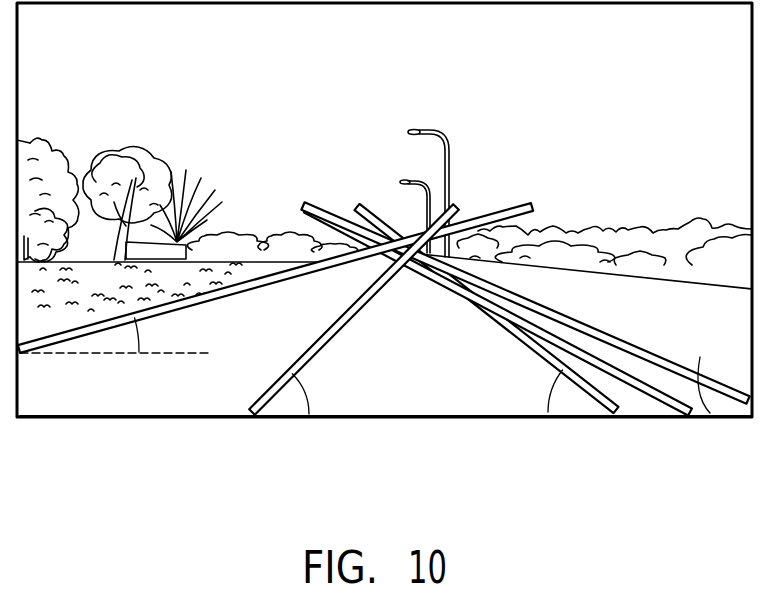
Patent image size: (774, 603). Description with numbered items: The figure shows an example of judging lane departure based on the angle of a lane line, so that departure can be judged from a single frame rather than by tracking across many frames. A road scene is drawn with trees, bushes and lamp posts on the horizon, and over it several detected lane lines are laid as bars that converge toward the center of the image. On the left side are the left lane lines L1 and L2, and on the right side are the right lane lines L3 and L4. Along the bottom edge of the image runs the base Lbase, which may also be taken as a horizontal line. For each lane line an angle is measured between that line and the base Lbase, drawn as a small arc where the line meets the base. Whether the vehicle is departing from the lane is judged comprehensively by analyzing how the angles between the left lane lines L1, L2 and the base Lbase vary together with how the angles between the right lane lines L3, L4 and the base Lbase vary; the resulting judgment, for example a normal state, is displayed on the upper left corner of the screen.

The left lane line L1 is at (260, 286).
The left lane line L2 is at (333, 335).
The right lane line L3 is at (507, 332).
The right lane line L4 is at (547, 307).
The base Lbase is at (448, 417).